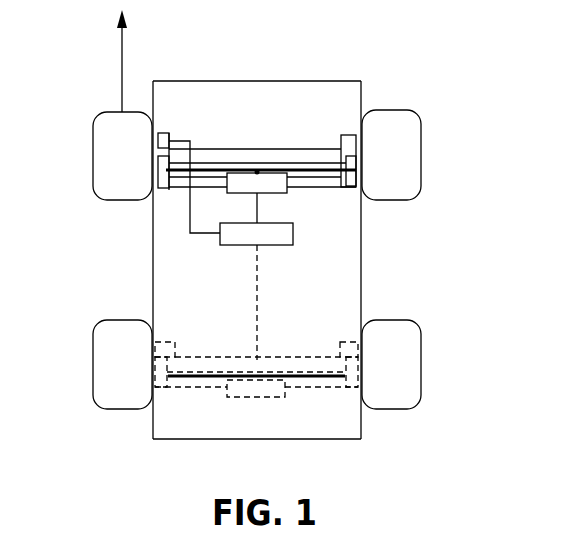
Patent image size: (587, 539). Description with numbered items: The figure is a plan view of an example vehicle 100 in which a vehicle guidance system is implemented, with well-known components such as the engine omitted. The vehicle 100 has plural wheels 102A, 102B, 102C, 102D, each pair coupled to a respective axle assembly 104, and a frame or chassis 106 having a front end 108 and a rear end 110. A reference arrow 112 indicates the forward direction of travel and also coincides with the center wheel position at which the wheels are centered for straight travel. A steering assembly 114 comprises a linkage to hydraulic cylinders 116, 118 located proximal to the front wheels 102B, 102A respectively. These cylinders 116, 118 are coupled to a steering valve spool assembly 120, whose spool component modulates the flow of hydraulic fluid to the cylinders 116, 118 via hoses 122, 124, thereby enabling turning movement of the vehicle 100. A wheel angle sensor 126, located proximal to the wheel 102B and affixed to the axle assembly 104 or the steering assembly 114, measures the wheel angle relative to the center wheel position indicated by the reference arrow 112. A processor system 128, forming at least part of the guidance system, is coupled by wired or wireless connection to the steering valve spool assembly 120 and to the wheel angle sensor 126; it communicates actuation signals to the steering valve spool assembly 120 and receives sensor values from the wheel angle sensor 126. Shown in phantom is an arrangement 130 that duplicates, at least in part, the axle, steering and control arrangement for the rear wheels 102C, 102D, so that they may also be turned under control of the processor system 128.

The vehicle 100 is at (292, 245).
The wheel 102A is at (422, 155).
The wheel 102B is at (92, 155).
The wheel 102C is at (422, 365).
The wheel 102D is at (92, 363).
The axle assembly 104 is at (322, 148).
The frame or chassis 106 is at (361, 260).
The front end 108 is at (280, 81).
The rear end 110 is at (332, 439).
The reference arrow 112 is at (123, 53).
The steering assembly 114 is at (332, 188).
The hydraulic cylinder 116 is at (163, 188).
The hydraulic cylinder 118 is at (352, 137).
The steering valve spool assembly 120 is at (283, 195).
The hose 122 is at (230, 167).
The hose 124 is at (281, 169).
The wheel angle sensor 126 is at (162, 135).
The processor system 128 is at (295, 235).
The arrangement 130 is at (223, 335).